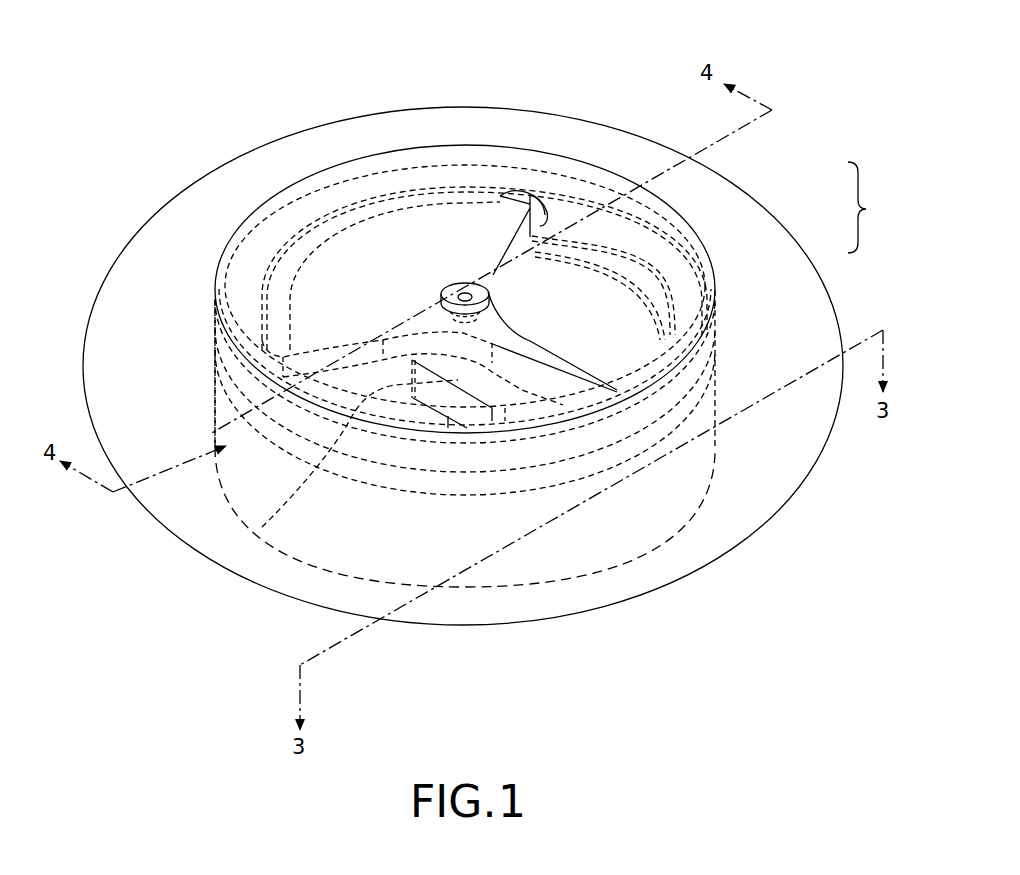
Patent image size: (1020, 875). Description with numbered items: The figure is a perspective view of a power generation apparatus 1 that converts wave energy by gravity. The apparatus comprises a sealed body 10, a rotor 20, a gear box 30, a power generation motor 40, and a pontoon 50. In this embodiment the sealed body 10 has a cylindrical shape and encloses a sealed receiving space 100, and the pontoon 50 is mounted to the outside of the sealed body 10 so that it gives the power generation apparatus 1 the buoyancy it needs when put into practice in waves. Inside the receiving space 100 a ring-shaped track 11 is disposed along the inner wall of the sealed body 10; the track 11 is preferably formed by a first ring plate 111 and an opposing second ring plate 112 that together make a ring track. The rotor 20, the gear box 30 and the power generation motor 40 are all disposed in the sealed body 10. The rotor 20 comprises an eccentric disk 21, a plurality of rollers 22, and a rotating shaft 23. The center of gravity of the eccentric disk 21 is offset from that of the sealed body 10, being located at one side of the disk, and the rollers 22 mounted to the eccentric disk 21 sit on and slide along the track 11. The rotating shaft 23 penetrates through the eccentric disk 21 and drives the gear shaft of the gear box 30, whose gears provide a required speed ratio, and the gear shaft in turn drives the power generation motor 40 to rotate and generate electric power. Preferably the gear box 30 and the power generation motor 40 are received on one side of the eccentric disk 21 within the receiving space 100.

The power generation apparatus 1 is at (471, 30).
The sealed body 10 is at (616, 185).
The track 11 is at (872, 207).
The first ring plate 111 is at (655, 235).
The second ring plate 112 is at (650, 290).
The rotor 20 is at (372, 172).
The eccentric disk 21 is at (466, 283).
The rollers 22 is at (522, 196).
The rotating shaft 23 is at (463, 292).
The gear box 30 is at (262, 527).
The power generation motor 40 is at (585, 567).
The pontoon 50 is at (186, 212).
The receiving space 100 is at (213, 453).